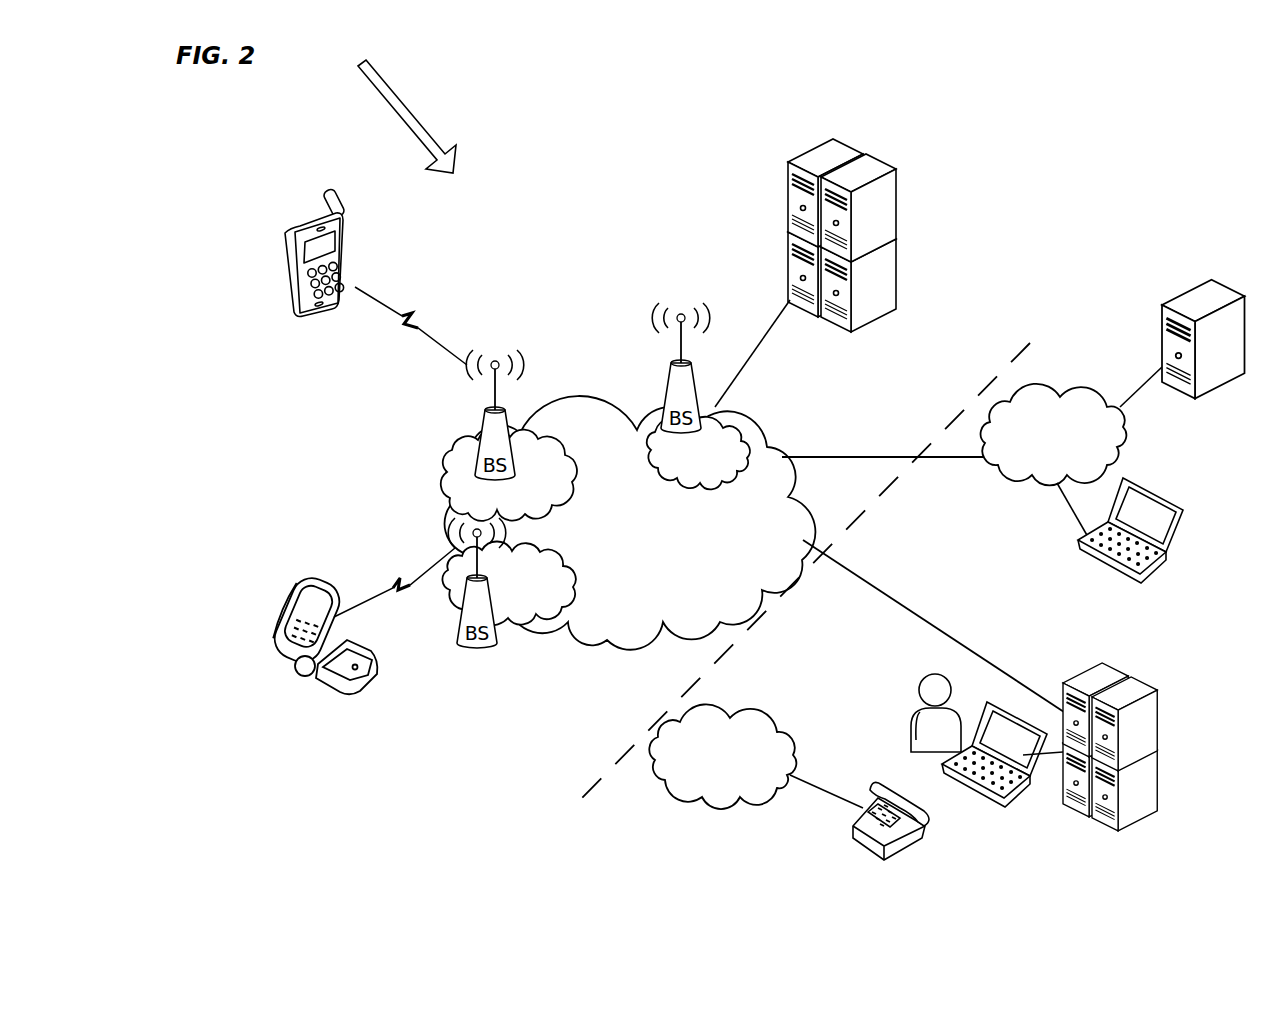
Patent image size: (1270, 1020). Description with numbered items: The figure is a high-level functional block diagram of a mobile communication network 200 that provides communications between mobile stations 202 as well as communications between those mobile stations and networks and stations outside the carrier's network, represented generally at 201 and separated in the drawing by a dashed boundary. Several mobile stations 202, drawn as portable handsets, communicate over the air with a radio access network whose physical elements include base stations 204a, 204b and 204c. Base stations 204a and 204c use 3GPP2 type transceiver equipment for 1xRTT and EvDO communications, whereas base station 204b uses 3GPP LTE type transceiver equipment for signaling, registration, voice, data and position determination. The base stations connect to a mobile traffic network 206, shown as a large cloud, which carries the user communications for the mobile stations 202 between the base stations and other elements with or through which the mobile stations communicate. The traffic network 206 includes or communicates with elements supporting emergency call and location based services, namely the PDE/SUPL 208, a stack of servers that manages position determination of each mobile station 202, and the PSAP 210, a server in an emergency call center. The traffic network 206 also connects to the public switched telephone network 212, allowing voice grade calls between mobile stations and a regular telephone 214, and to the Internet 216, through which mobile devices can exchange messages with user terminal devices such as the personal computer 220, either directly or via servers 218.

The mobile communication network 200 is at (394, 110).
The networks and stations outside the mobile communication network 201 is at (804, 572).
The mobile stations 202 is at (284, 239).
The base station 204a is at (480, 432).
The base station 204b is at (668, 388).
The base station 204c is at (498, 649).
The mobile traffic network 206 is at (575, 402).
The PDE/SUPL 208 is at (790, 215).
The PSAP 210 is at (1158, 751).
The public switched telephone network 212 is at (790, 741).
The telephone 214 is at (853, 843).
The Internet 216 is at (1004, 474).
The servers 218 is at (1160, 350).
The personal computer 220 is at (1078, 552).